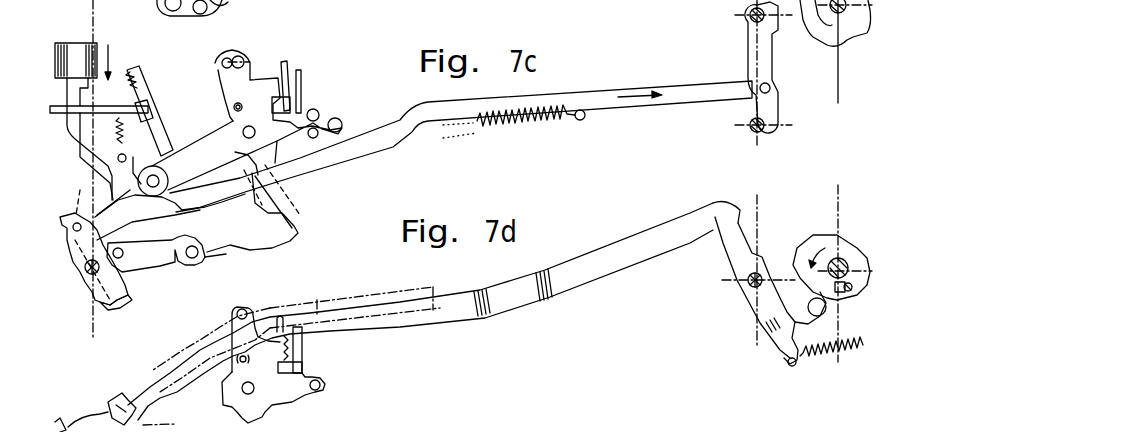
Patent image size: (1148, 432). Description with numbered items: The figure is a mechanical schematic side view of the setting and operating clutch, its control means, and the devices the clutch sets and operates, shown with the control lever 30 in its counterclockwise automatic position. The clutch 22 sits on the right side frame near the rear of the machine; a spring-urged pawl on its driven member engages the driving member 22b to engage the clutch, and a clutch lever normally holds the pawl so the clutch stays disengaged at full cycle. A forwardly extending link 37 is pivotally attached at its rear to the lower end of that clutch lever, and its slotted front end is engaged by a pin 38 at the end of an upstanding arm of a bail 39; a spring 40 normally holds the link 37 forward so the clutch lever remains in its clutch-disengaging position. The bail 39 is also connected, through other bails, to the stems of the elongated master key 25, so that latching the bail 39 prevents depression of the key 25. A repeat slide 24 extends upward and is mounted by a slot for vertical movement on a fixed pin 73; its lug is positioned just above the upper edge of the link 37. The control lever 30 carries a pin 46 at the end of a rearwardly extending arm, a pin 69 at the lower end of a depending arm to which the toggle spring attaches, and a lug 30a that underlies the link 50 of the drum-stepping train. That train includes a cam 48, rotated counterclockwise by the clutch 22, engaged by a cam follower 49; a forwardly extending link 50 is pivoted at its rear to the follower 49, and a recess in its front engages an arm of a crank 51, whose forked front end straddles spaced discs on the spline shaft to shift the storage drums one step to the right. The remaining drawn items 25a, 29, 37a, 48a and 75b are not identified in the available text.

In FIG. 7C, the clutch 22 is at (813, 24).
In FIG. 7C, the driving member 22b is at (832, 40).
In FIG. 7C, the repeat slide 24 is at (133, 101).
In FIG. 7C, the master key 25 is at (78, 52).
In FIG. 7C, the bracket 25a is at (119, 229).
In FIG. 7C, the gear assembly 29 is at (206, 12).
In FIG. 7C, the control lever 30 is at (238, 119).
In FIG. 7D, the control lever 30 is at (292, 400).
In FIG. 7C, the lug 30a is at (288, 68).
In FIG. 7D, the lug 30a is at (302, 367).
In FIG. 7C, the link 37 is at (681, 114).
In FIG. 7C, the arm 37a is at (262, 212).
In FIG. 7C, the pin 38 is at (92, 235).
In FIG. 7C, the bail 39 is at (125, 306).
In FIG. 7C, the spring 40 is at (523, 132).
In FIG. 7C, the pin 46 is at (322, 113).
In FIG. 7D, the pin 46 is at (323, 392).
In FIG. 7D, the cam 48 is at (805, 235).
In FIG. 7D, the cam lobe 48a is at (862, 247).
In FIG. 7D, the cam follower 49 is at (733, 257).
In FIG. 7D, the link 50 is at (628, 268).
In FIG. 7D, the crank 51 is at (108, 398).
In FIG. 7C, the pin 69 is at (298, 218).
In FIG. 7C, the fixed pin 73 is at (148, 117).
In FIG. 7D, the spring 75b is at (846, 343).